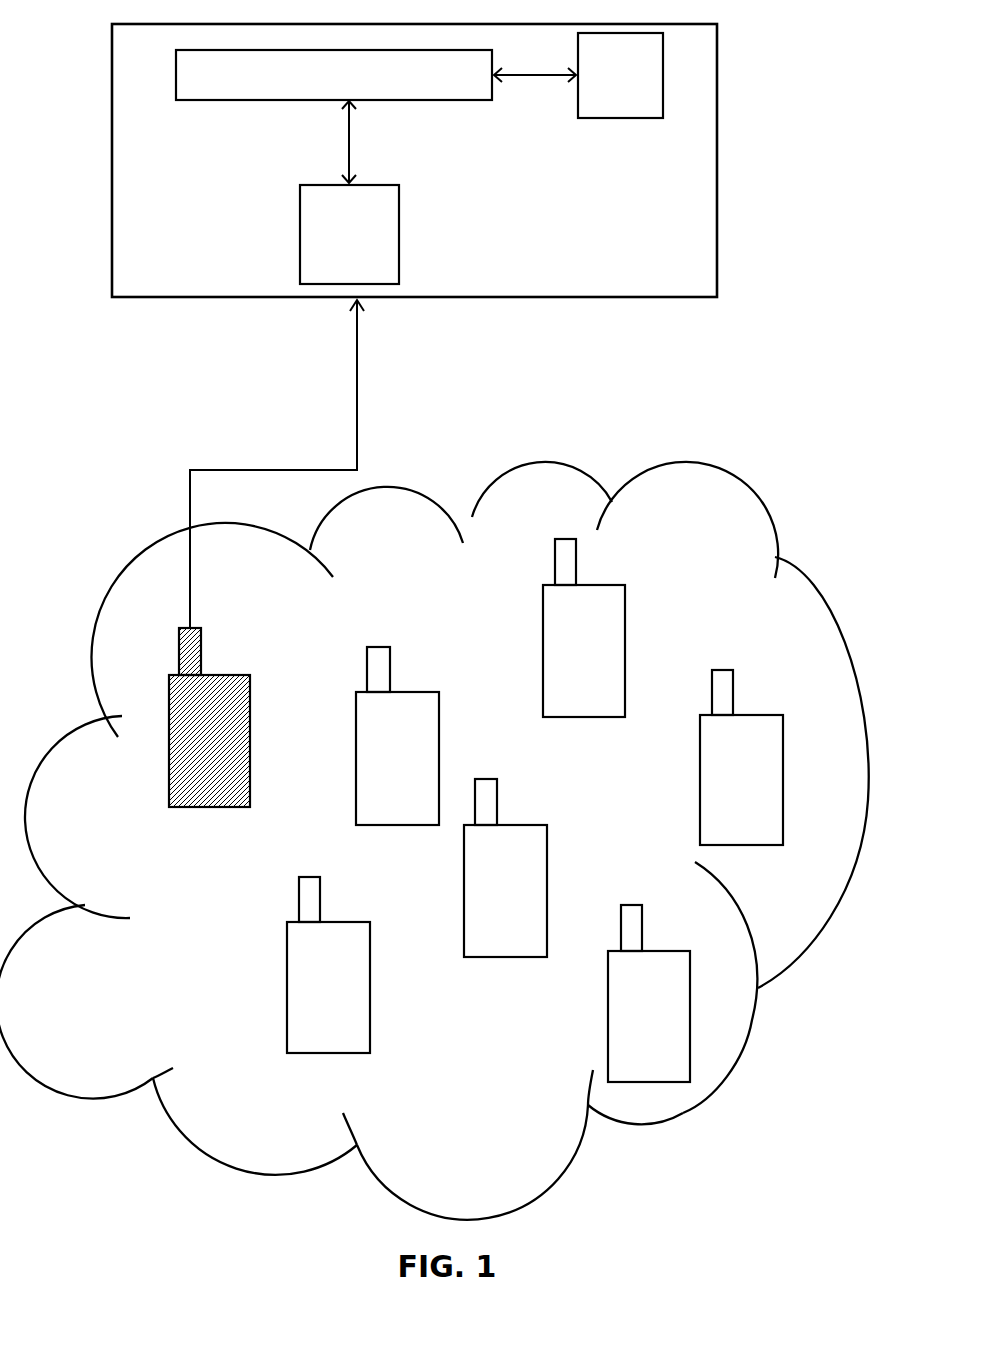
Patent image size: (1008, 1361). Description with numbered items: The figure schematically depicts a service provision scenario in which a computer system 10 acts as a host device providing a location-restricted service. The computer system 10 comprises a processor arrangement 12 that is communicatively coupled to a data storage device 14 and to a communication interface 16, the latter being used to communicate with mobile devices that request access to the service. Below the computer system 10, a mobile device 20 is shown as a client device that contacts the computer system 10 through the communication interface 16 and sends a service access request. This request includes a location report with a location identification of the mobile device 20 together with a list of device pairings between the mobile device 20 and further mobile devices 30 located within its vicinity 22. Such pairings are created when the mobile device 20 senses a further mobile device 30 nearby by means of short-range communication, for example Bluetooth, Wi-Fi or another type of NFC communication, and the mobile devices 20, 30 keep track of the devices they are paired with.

The computer system 10 is at (663, 298).
The processor arrangement 12 is at (468, 93).
The data storage device 14 is at (608, 93).
The communication interface 16 is at (377, 267).
The mobile device 20 is at (215, 782).
The vicinity 22 is at (807, 970).
The further mobile devices 30 is at (382, 810).